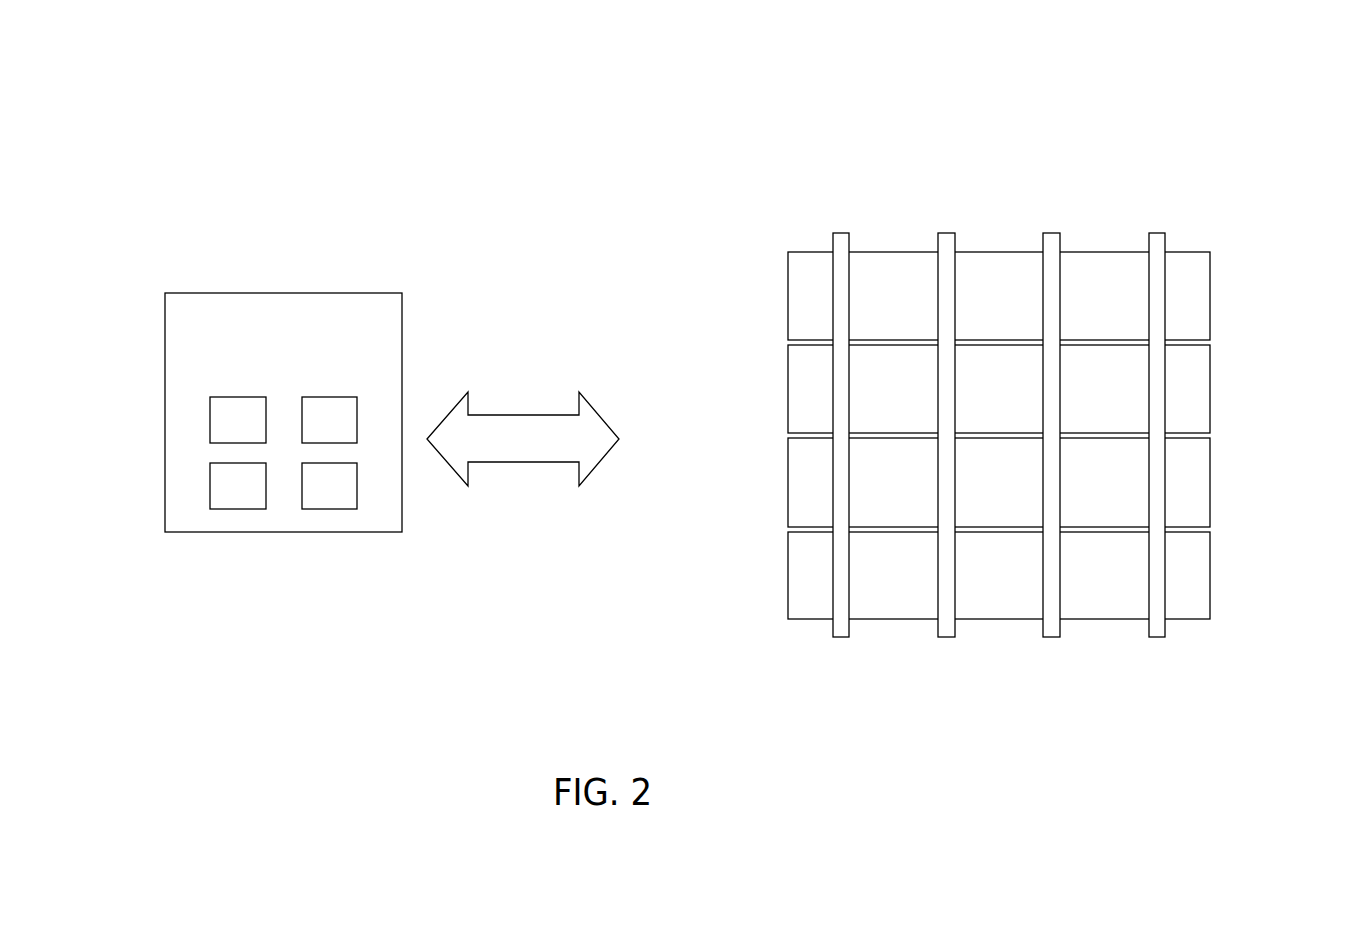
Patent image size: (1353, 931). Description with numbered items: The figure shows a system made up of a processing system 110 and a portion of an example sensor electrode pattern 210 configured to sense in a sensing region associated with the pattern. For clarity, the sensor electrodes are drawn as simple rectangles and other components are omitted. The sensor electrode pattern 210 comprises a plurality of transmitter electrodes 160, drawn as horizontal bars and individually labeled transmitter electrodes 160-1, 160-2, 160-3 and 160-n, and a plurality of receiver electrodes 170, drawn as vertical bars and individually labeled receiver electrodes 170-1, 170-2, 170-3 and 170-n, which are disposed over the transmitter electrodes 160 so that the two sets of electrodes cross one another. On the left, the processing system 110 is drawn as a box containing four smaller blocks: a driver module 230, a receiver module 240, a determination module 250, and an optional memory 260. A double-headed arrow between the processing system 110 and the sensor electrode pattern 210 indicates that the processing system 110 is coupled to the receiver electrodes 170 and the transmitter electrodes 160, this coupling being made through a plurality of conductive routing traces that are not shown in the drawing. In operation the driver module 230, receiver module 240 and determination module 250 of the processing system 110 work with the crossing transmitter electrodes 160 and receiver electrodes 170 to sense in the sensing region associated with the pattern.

The processing system 110 is at (305, 386).
The driver module 230 is at (210, 421).
The receiver module 240 is at (238, 509).
The determination module 250 is at (325, 509).
The memory 260 is at (357, 434).
The sensor electrode pattern 210 is at (1110, 103).
The transmitter electrodes 160 is at (762, 237).
The transmitter electrode 160-1 is at (1192, 293).
The transmitter electrode 160-2 is at (1192, 378).
The transmitter electrode 160-3 is at (1192, 472).
The transmitter electrode 160-n is at (1192, 565).
The receiver electrodes 170 is at (1182, 222).
The receiver electrode 170-1 is at (839, 637).
The receiver electrode 170-2 is at (945, 637).
The receiver electrode 170-3 is at (1050, 637).
The receiver electrode 170-n is at (1156, 637).